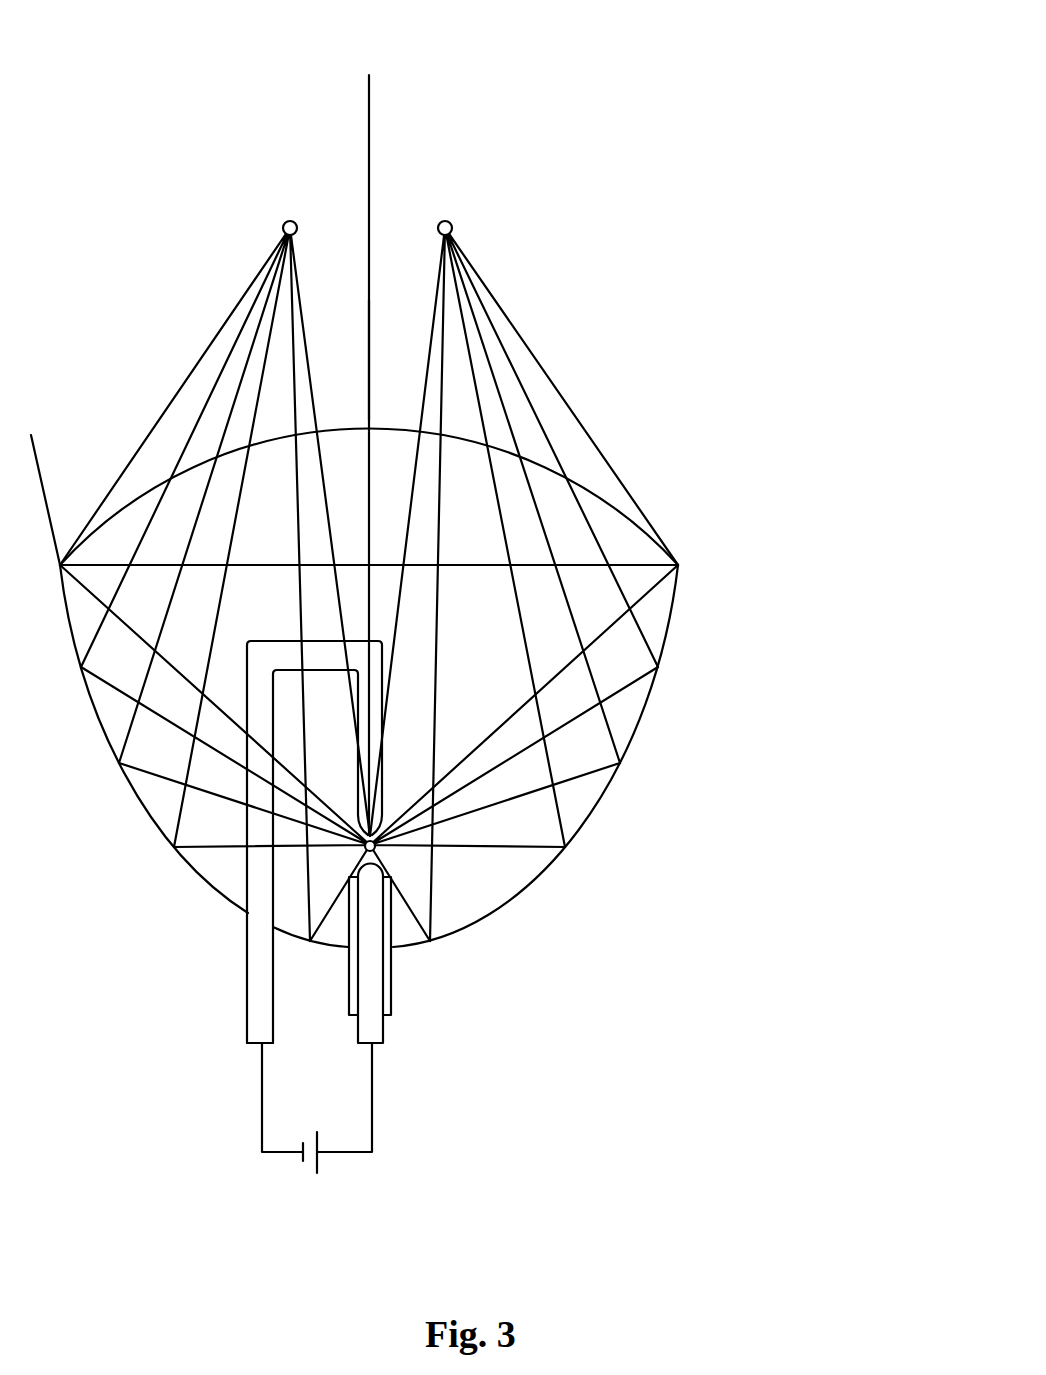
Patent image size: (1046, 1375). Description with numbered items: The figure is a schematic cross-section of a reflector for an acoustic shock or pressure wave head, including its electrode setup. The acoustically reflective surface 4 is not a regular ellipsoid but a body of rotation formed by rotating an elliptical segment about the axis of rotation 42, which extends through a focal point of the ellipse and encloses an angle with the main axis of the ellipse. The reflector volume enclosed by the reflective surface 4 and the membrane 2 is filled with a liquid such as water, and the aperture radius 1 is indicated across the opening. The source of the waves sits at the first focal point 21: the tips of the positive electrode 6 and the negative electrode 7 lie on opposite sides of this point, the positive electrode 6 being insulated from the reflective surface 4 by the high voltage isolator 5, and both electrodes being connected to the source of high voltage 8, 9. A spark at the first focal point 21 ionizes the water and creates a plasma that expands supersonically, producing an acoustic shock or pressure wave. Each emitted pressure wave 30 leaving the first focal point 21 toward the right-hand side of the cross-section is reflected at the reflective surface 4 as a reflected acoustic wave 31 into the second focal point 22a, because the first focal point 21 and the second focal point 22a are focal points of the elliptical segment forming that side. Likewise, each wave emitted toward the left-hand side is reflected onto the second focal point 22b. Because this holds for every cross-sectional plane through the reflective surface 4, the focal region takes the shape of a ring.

The aperture radius 1 is at (310, 385).
The membrane 2 is at (621, 505).
The acoustically reflective surface 4 is at (649, 713).
The high voltage isolator 5 is at (393, 992).
The positive electrode 6 is at (385, 1042).
The negative electrode 7 is at (242, 1026).
The source of high voltage 8 is at (321, 1158).
The source of high voltage 9 is at (300, 1158).
The first focal point 21 is at (387, 848).
The second focal point 22a is at (451, 221).
The second focal point 22b is at (281, 228).
The emitted pressure wave 30 is at (651, 602).
The reflected acoustic wave 31 is at (479, 277).
The axis of rotation 42 is at (364, 216).